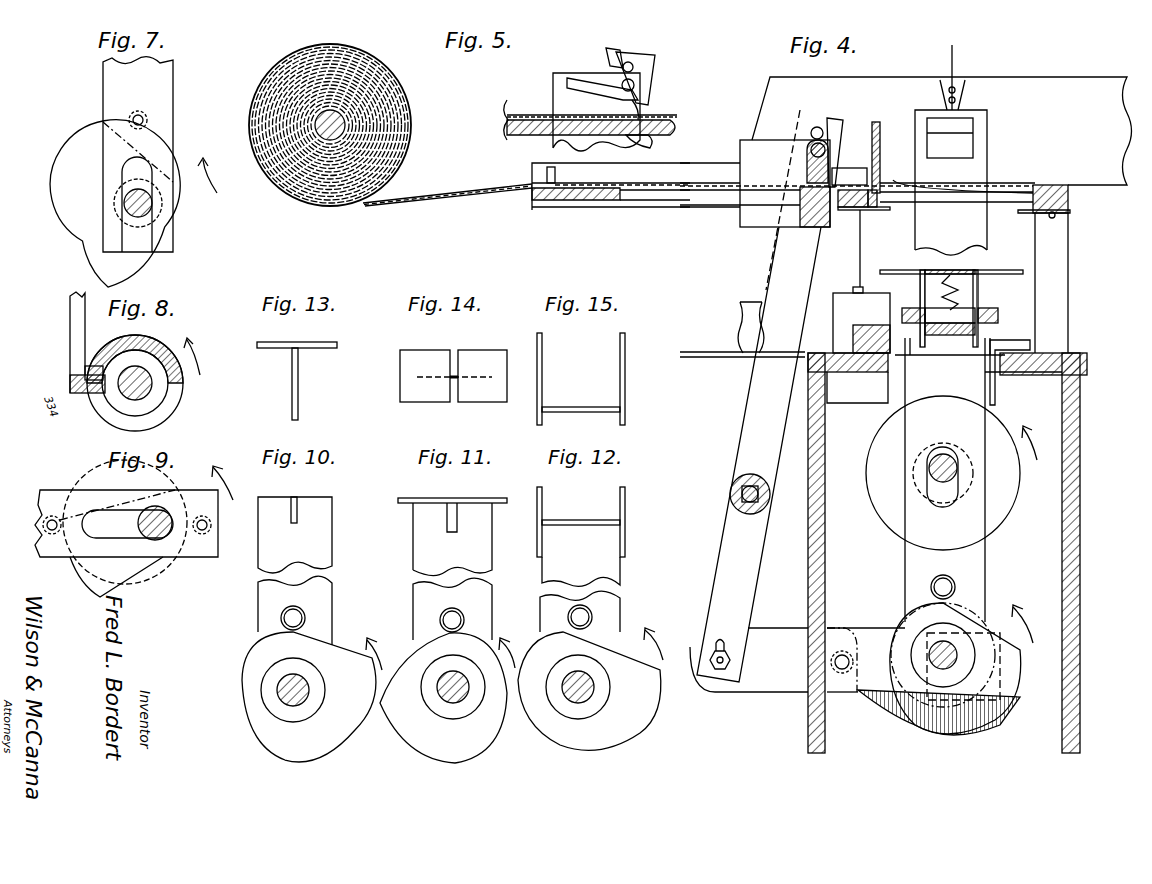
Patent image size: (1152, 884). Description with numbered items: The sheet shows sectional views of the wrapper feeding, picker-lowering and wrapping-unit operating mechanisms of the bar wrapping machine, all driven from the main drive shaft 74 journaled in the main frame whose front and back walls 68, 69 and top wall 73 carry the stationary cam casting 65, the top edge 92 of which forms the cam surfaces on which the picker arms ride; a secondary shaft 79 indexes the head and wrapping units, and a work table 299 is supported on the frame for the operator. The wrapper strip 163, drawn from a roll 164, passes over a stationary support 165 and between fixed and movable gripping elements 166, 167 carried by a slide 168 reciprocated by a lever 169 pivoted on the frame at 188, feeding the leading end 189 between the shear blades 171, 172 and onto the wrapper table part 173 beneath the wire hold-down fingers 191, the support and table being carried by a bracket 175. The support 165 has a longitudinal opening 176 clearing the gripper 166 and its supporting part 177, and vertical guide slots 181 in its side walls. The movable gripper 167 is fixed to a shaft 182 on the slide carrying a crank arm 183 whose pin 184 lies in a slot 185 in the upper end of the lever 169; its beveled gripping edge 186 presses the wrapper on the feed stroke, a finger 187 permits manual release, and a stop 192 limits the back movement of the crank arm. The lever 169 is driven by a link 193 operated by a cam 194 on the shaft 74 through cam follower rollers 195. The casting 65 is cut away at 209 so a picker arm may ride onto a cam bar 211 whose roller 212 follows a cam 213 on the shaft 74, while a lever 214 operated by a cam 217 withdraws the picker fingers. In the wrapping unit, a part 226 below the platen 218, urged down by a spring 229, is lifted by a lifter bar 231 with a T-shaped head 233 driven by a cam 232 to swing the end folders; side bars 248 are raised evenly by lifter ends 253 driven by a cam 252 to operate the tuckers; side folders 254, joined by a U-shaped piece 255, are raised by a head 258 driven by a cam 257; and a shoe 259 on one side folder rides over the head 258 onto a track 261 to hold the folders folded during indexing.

In FIG. 4, the cam casting 65 is at (1073, 85).
In FIG. 4, the front wall 68 is at (815, 535).
In FIG. 4, the back wall 69 is at (1085, 522).
In FIG. 4, the top wall 73 is at (860, 372).
In FIG. 7, the main drive shaft 74 is at (145, 205).
In FIG. 8, the main drive shaft 74 is at (133, 390).
In FIG. 9, the main drive shaft 74 is at (157, 540).
In FIG. 10, the main drive shaft 74 is at (308, 683).
In FIG. 11, the main drive shaft 74 is at (458, 675).
In FIG. 12, the main drive shaft 74 is at (595, 683).
In FIG. 4, the main drive shaft 74 is at (958, 660).
In FIG. 4, the secondary shaft 79 is at (958, 477).
In FIG. 4, the top edge of the cam casting 92 is at (1025, 80).
In FIG. 5, the wrapper strip 163 is at (480, 193).
In FIG. 5, the roll 164 is at (395, 48).
In FIG. 5, the stationary support 165 is at (508, 124).
In FIG. 5, the fixed gripping element 166 is at (640, 97).
In FIG. 4, the fixed gripping element 166 is at (800, 227).
In FIG. 5, the movable gripping element 167 is at (638, 88).
In FIG. 4, the movable gripping element 167 is at (840, 142).
In FIG. 5, the slide 168 is at (553, 88).
In FIG. 4, the slide 168 is at (752, 150).
In FIG. 4, the lever 169 is at (778, 268).
In FIG. 4, the fixed shear blade 171 is at (870, 212).
In FIG. 4, the stationary shear blade 172 is at (880, 128).
In FIG. 4, the wrapper table part 173 is at (1040, 185).
In FIG. 4, the bracket 175 is at (1060, 232).
In FIG. 5, the longitudinal opening 176 is at (640, 200).
In FIG. 4, the supporting part 177 is at (818, 232).
In FIG. 5, the vertical guide slots 181 is at (532, 165).
In FIG. 5, the shaft 182 is at (625, 88).
In FIG. 4, the shaft 182 is at (807, 158).
In FIG. 5, the crank arm 183 is at (640, 73).
In FIG. 4, the crank arm 183 is at (838, 130).
In FIG. 5, the pin 184 is at (655, 60).
In FIG. 4, the pin 184 is at (833, 118).
In FIG. 5, the slot 185 is at (612, 53).
In FIG. 4, the slot 185 is at (812, 128).
In FIG. 4, the gripping edge 186 is at (838, 165).
In FIG. 5, the finger 187 is at (567, 80).
In FIG. 4, the pivot 188 is at (731, 494).
In FIG. 4, the leading end of the wrapper 189 is at (1012, 192).
In FIG. 4, the wire hold-down fingers 191 is at (918, 166).
In FIG. 4, the stop 192 is at (800, 145).
In FIG. 9, the link 193 is at (52, 495).
In FIG. 4, the link 193 is at (766, 630).
In FIG. 9, the cam 194 is at (72, 575).
In FIG. 4, the cam 194 is at (880, 715).
In FIG. 9, the cam follower rollers 195 is at (143, 493).
In FIG. 4, the cam follower rollers 195 is at (843, 654).
In FIG. 4, the cut-away 209 is at (958, 80).
In FIG. 7, the cam bar 211 is at (150, 82).
In FIG. 4, the cam bar 211 is at (987, 133).
In FIG. 7, the roller 212 is at (148, 118).
In FIG. 7, the cam 213 is at (82, 143).
In FIG. 8, the lever 214 is at (72, 335).
In FIG. 8, the cam 217 is at (143, 338).
In FIG. 4, the platen 218 is at (950, 268).
In FIG. 4, the part 226 is at (965, 366).
In FIG. 4, the spring 229 is at (978, 280).
In FIG. 10, the lifter bar 231 is at (322, 598).
In FIG. 10, the cam 232 is at (338, 725).
In FIG. 13, the T-shaped head 233 is at (298, 368).
In FIG. 10, the T-shaped head 233 is at (293, 497).
In FIG. 4, the side bars 248 is at (905, 312).
In FIG. 12, the cam 252 is at (625, 730).
In FIG. 15, the lifter ends 253 is at (617, 338).
In FIG. 12, the lifter ends 253 is at (625, 490).
In FIG. 4, the side folders 254 is at (910, 266).
In FIG. 4, the U-shaped piece 255 is at (978, 300).
In FIG. 11, the cam 257 is at (470, 735).
In FIG. 14, the head 258 is at (475, 400).
In FIG. 11, the head 258 is at (443, 500).
In FIG. 4, the shoe 259 is at (1030, 342).
In FIG. 4, the track 261 is at (862, 330).
In FIG. 4, the work table 299 is at (710, 358).